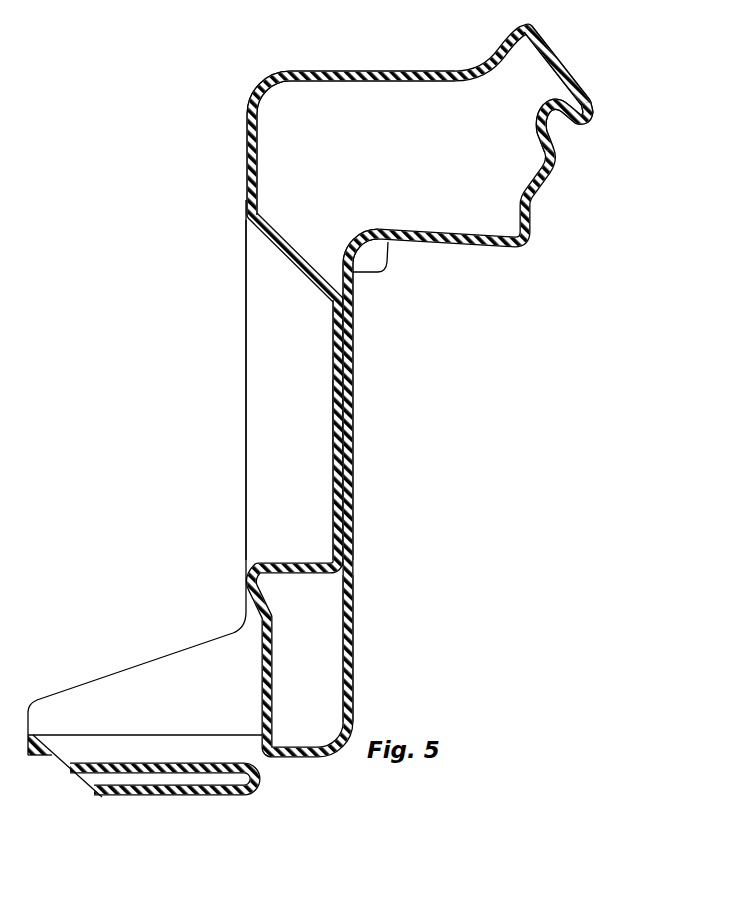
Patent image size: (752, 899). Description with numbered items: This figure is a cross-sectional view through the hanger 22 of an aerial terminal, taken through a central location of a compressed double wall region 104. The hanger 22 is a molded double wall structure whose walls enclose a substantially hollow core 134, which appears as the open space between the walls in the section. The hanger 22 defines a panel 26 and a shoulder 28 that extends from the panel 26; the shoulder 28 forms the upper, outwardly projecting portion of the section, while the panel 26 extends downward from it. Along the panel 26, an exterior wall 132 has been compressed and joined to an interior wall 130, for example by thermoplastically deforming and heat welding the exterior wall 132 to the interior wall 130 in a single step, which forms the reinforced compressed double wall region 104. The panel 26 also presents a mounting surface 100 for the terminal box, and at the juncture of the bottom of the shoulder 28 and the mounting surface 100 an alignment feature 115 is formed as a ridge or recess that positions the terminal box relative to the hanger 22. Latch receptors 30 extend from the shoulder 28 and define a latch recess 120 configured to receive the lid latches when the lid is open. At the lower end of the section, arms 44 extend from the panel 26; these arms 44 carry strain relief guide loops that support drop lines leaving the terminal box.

The hanger 22 is at (192, 74).
The shoulder 28 is at (383, 72).
The latch receptors 30 is at (557, 53).
The latch recess 120 is at (572, 137).
The alignment feature 115 is at (386, 268).
The interior wall 130 is at (348, 360).
The exterior wall 132 is at (335, 415).
The mounting surface 100 is at (350, 438).
The hollow core 134 is at (265, 125).
The panel 26 is at (245, 480).
The compressed double wall region 104 is at (278, 362).
The arms 44 is at (117, 688).